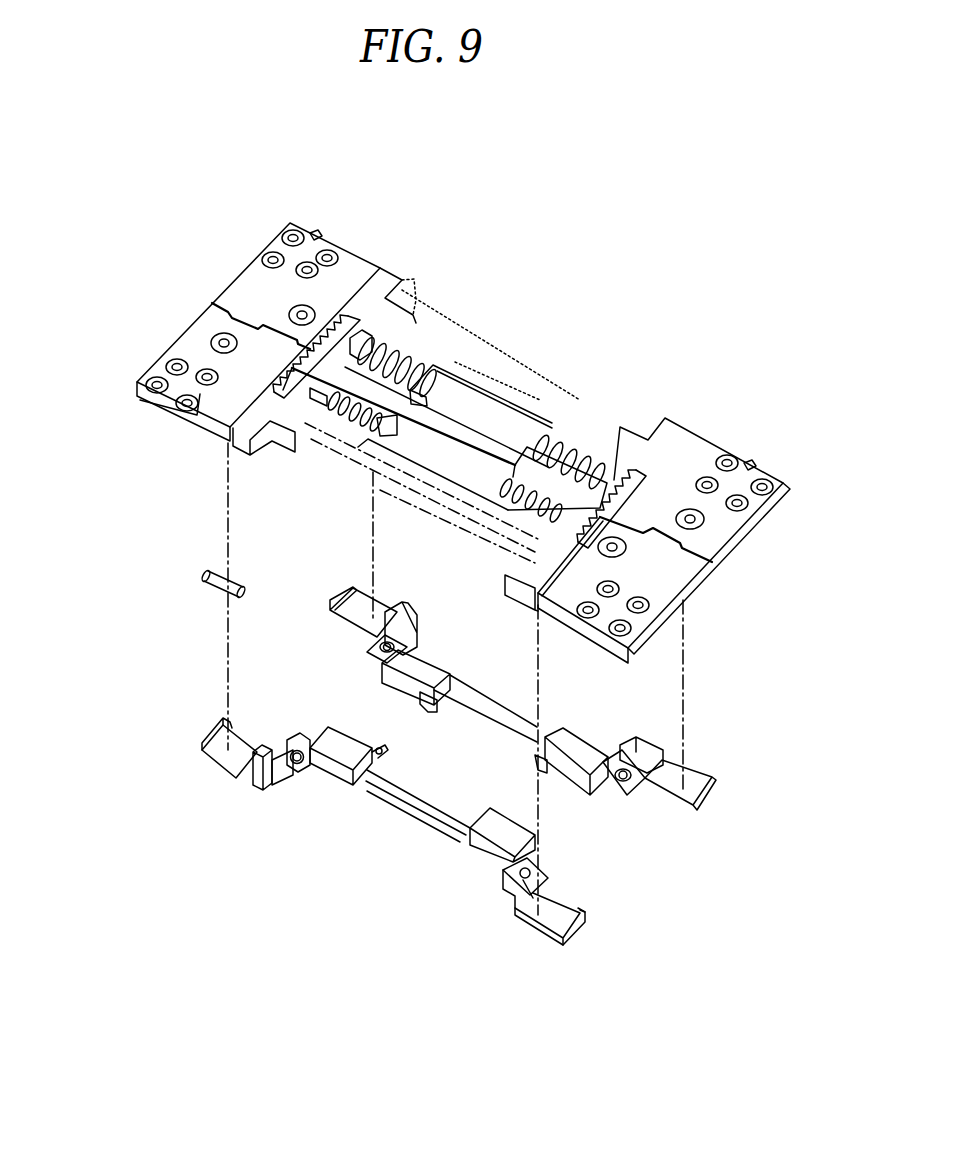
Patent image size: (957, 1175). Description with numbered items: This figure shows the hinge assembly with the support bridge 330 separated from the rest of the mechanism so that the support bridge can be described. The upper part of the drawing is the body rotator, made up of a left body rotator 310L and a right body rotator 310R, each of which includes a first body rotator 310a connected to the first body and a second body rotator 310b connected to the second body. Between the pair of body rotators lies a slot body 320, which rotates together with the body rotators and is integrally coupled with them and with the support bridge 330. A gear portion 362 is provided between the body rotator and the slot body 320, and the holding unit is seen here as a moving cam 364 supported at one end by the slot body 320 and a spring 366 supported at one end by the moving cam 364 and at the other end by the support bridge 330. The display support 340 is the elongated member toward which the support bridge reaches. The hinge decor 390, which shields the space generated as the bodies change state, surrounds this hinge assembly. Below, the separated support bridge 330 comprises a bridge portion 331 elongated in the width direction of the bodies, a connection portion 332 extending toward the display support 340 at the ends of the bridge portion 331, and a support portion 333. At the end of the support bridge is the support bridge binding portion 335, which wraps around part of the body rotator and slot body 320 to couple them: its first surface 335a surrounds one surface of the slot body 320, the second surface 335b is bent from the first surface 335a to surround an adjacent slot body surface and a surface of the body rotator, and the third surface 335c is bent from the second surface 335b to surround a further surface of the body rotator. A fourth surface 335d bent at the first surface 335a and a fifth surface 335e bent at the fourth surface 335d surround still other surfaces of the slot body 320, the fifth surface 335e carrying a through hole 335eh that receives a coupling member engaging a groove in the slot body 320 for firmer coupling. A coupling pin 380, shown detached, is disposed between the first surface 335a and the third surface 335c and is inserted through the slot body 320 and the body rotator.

The left body rotator 310L is at (110, 233).
The right body rotator 310R is at (812, 553).
The first body rotator 310a is at (247, 283).
The second body rotator 310b is at (203, 326).
The slot body 320 is at (670, 437).
The support bridge 330 is at (423, 822).
The bridge portion 331 is at (423, 815).
The connection portion 332 is at (340, 748).
The support portion 333 is at (380, 752).
The support bridge binding portion 335 is at (236, 766).
The first surface 335a is at (264, 768).
The second surface 335b is at (215, 760).
The third surface 335c is at (202, 748).
The fourth surface 335d is at (283, 773).
The fifth surface 335e is at (293, 721).
The through hole 335eh is at (292, 740).
The display support 340 is at (447, 430).
The gear portion 362 is at (344, 312).
The moving cam 364 is at (594, 462).
The spring 366 is at (404, 360).
The coupling pin 380 is at (205, 570).
The hinge decor 390 is at (690, 600).